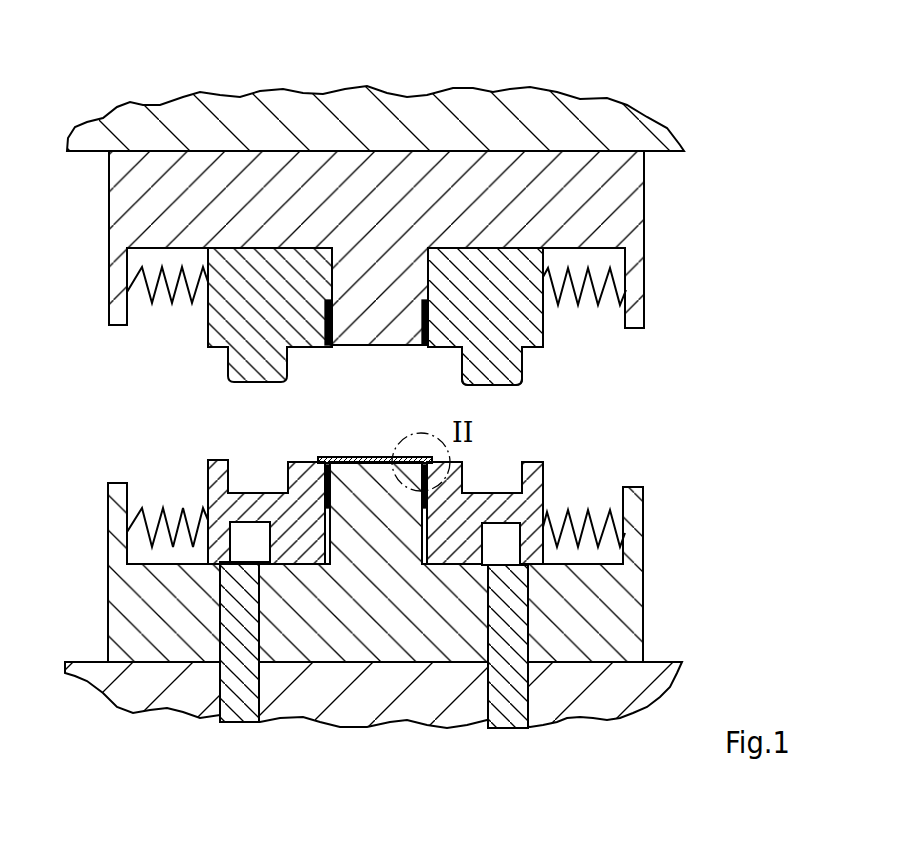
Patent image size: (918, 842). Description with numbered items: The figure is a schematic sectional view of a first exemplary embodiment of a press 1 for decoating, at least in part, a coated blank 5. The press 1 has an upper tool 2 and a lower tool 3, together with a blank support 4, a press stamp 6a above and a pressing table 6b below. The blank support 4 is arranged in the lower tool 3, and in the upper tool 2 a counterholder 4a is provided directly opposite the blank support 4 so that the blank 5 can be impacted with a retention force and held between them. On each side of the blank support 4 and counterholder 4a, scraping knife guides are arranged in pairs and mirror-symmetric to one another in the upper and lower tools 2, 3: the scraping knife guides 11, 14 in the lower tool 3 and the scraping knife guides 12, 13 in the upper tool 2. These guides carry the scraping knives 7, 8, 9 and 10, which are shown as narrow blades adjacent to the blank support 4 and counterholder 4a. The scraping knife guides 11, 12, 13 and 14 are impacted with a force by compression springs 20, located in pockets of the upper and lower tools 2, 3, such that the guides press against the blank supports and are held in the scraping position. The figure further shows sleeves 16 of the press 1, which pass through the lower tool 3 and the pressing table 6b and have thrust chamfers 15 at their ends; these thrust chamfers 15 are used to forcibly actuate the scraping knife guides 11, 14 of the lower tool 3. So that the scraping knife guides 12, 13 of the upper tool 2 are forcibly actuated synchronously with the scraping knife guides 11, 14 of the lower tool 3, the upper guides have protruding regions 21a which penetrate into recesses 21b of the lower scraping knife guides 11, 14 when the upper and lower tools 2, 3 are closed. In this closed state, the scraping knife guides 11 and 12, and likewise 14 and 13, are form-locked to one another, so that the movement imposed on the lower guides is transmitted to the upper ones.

The press 1 is at (730, 107).
The upper tool 2 is at (610, 205).
The lower tool 3 is at (618, 630).
The blank support 4 is at (350, 473).
The counterholder 4a is at (397, 330).
The blank 5 is at (367, 457).
The press stamp 6a is at (607, 118).
The pressing table 6b is at (612, 693).
The scraping knife 7 is at (330, 490).
The scraping knife 8 is at (333, 316).
The scraping knife 9 is at (423, 316).
The scraping knife 10 is at (422, 490).
The scraping knife guide 11 is at (302, 543).
The scraping knife guide 12 is at (267, 265).
The scraping knife guide 13 is at (468, 265).
The scraping knife guide 14 is at (449, 547).
The thrust chamfer 15 is at (535, 577).
The sleeve 16 is at (240, 693).
The compression spring 20 is at (580, 300).
The protruding region 21a is at (509, 372).
The recess 21b is at (507, 478).